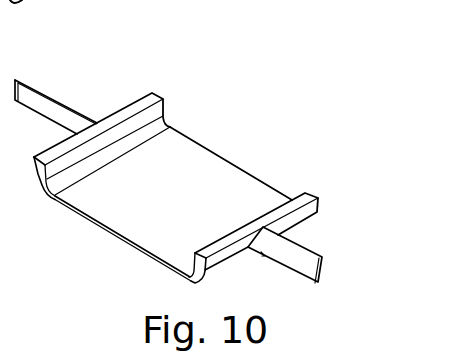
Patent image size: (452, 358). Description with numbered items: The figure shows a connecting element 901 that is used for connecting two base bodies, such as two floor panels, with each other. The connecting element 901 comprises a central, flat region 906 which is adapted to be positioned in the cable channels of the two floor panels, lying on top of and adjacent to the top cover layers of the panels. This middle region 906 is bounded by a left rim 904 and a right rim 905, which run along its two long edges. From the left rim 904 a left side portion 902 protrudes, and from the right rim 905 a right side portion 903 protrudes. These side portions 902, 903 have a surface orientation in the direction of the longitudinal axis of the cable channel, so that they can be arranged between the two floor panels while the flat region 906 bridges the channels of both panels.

The connecting element 901 is at (177, 162).
The left side portion 902 is at (51, 115).
The right side portion 903 is at (301, 255).
The left rim 904 is at (128, 113).
The right rim 905 is at (305, 190).
The central flat region 906 is at (224, 190).